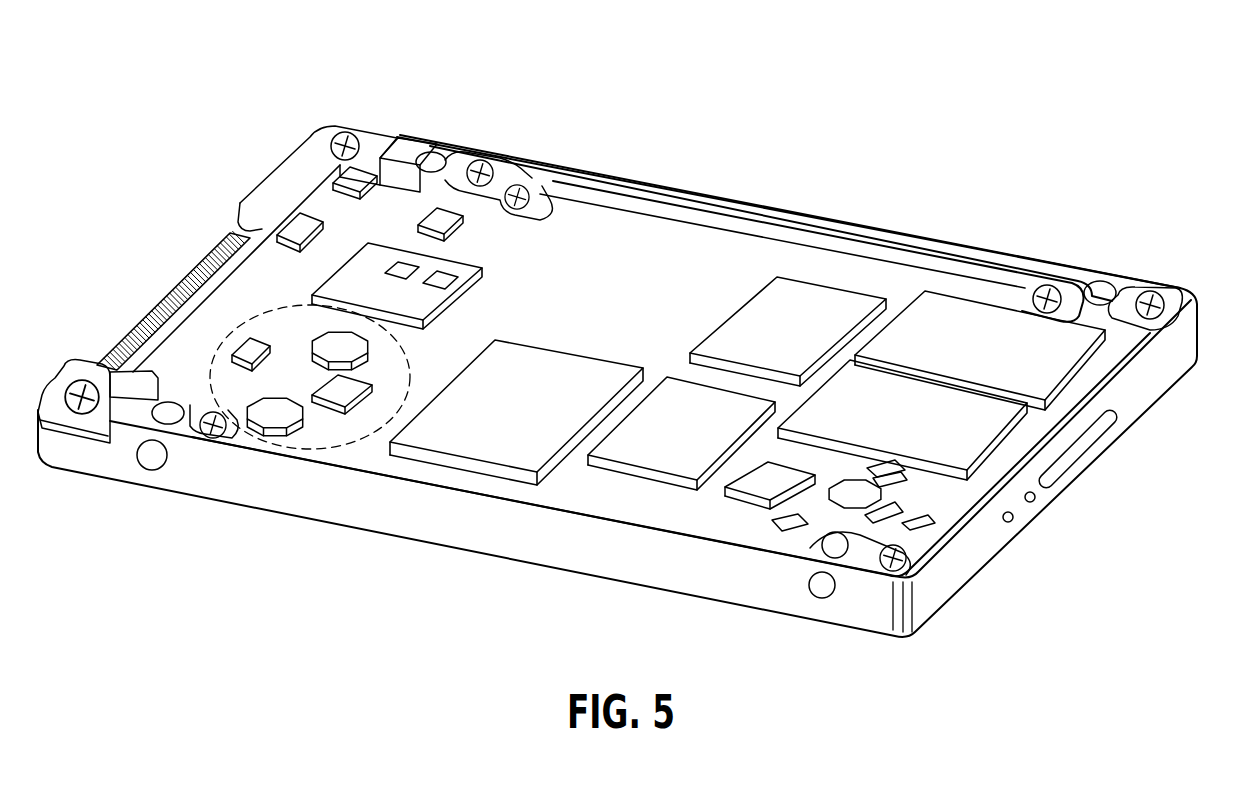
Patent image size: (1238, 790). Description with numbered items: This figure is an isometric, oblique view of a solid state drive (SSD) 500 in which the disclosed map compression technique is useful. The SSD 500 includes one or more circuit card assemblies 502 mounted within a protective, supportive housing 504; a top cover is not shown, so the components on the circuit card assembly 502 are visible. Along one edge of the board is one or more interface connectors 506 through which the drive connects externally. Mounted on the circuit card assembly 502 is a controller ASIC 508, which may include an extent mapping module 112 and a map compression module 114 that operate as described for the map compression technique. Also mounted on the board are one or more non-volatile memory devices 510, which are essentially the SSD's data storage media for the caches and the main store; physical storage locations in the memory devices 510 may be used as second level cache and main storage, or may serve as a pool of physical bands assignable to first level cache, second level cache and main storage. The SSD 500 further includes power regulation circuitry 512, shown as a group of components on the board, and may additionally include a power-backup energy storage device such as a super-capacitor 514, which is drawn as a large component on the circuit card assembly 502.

The solid state drive 500 is at (846, 140).
The circuit card assembly 502 is at (710, 237).
The housing 504 is at (360, 522).
The interface connector 506 is at (203, 255).
The controller ASIC 508 is at (378, 285).
The extent mapping module 112 is at (407, 267).
The map compression module 114 is at (447, 275).
The non-volatile memory device 510 is at (710, 415).
The power regulation circuitry 512 is at (285, 450).
The super-capacitor 514 is at (527, 413).